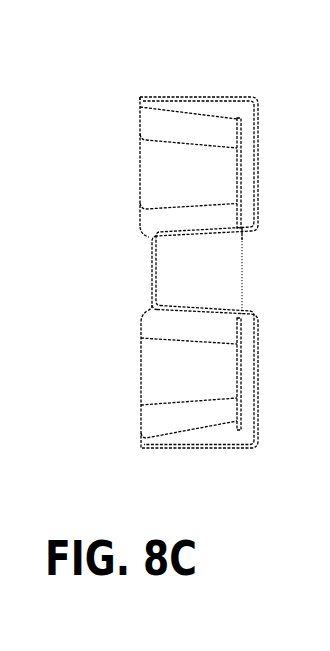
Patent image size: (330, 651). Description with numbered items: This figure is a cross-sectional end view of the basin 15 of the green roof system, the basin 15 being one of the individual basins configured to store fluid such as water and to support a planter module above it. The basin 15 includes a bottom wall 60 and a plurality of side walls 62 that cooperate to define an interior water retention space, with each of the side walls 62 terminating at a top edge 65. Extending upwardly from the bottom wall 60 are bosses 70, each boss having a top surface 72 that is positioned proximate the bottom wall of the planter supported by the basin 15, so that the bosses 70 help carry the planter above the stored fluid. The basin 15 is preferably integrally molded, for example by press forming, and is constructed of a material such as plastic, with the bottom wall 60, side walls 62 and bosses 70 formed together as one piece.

The basin 15 is at (112, 222).
The bottom wall 60 is at (258, 153).
The side walls 62 is at (196, 98).
The top edge 65 is at (139, 128).
The bosses 70 is at (213, 272).
The top surface 72 is at (150, 280).